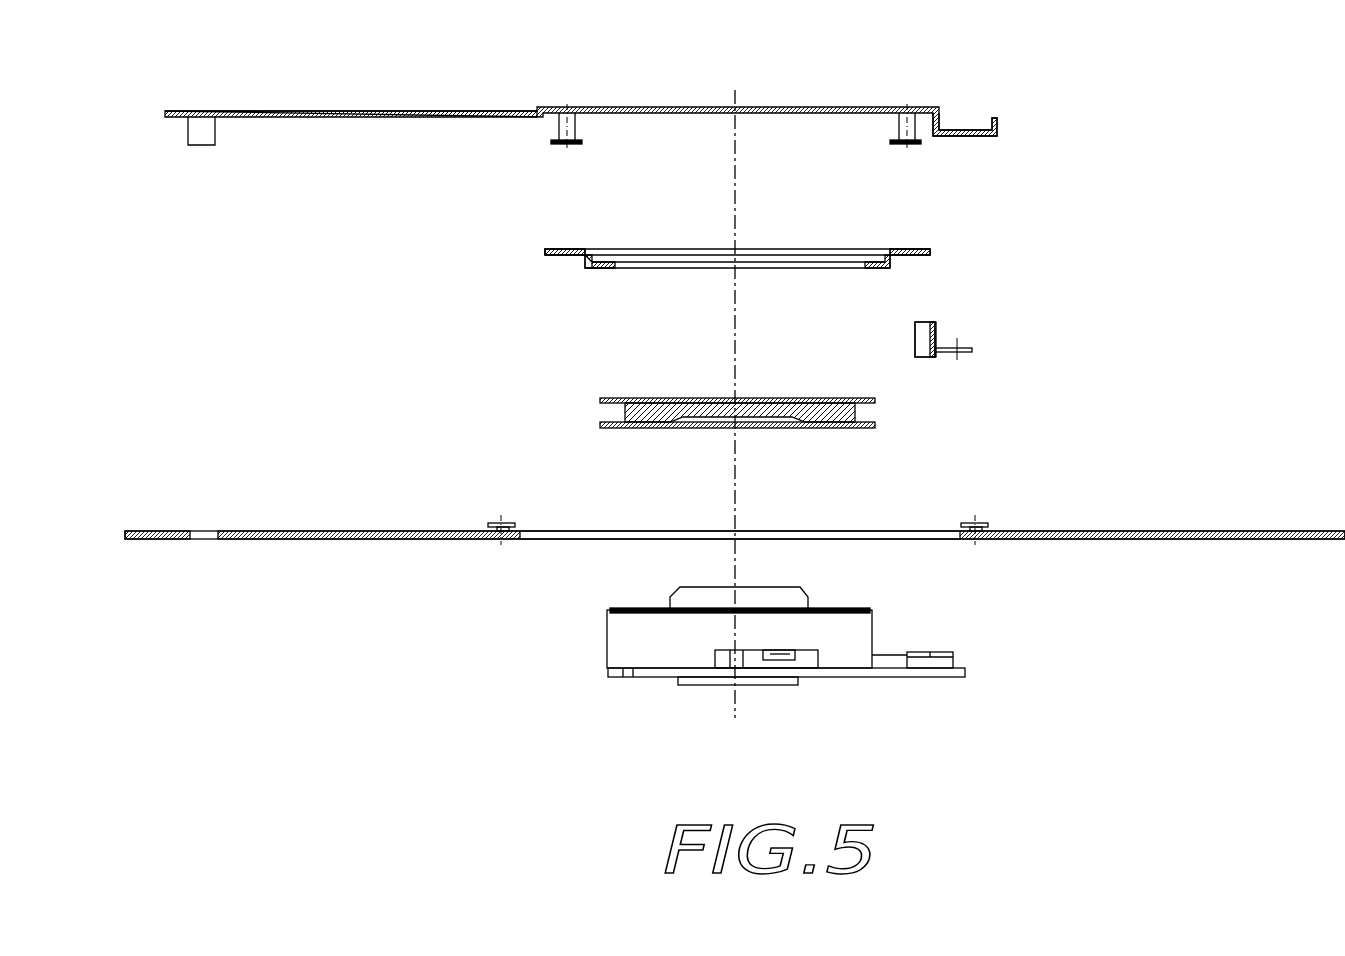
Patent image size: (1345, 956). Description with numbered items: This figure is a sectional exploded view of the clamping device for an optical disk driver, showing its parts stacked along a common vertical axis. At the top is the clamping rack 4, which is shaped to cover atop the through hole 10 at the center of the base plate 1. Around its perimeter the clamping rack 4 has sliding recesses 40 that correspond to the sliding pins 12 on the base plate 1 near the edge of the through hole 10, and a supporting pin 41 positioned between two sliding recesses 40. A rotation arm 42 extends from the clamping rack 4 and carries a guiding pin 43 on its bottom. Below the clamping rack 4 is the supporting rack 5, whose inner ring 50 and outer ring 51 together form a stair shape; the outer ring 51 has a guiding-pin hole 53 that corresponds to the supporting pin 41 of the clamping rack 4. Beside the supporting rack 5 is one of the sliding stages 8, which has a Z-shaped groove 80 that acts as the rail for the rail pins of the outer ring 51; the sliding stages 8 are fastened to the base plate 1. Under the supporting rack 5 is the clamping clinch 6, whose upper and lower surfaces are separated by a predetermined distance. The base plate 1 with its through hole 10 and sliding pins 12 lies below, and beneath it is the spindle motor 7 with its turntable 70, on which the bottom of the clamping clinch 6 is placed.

The base plate 1 is at (1187, 530).
The clamping rack 4 is at (771, 107).
The supporting rack 5 is at (930, 252).
The clamping clinch 6 is at (875, 425).
The spindle motor 7 is at (843, 663).
The sliding stage 8 is at (972, 350).
The through hole 10 is at (556, 539).
The sliding pin 12 is at (988, 523).
The sliding recess 40 is at (975, 128).
The supporting pin 41 is at (898, 124).
The rotation arm 42 is at (340, 110).
The guiding pin 43 is at (200, 145).
The inner ring 50 is at (600, 268).
The outer ring 51 is at (545, 255).
The guiding-pin hole 53 is at (904, 250).
The turntable 70 is at (838, 608).
The Z-shaped groove 80 is at (917, 343).